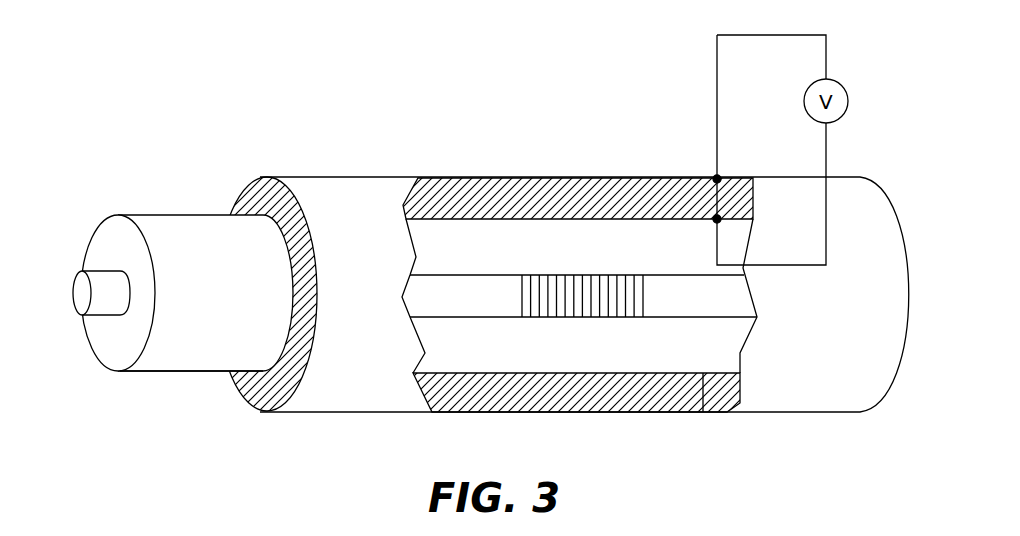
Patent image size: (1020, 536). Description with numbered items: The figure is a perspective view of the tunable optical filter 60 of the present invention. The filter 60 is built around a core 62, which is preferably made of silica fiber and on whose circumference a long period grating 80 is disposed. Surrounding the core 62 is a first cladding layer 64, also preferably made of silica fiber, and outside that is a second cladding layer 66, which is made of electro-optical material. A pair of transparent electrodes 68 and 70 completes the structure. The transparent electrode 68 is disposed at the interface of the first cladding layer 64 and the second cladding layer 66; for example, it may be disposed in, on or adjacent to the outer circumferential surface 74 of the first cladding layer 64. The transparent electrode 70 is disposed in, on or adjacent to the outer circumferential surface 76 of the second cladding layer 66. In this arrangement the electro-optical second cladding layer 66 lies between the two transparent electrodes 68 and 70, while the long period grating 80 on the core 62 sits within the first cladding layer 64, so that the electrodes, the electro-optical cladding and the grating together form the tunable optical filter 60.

The tunable optical filter 60 is at (432, 139).
The core 62 is at (79, 291).
The first cladding layer 64 is at (128, 346).
The second cladding layer 66 is at (254, 190).
The transparent electrode 68 is at (494, 220).
The transparent electrode 70 is at (578, 177).
The outer circumferential surface of first cladding layer 74 is at (177, 372).
The outer circumferential surface of second cladding layer 76 is at (703, 373).
The long period grating 80 is at (590, 305).